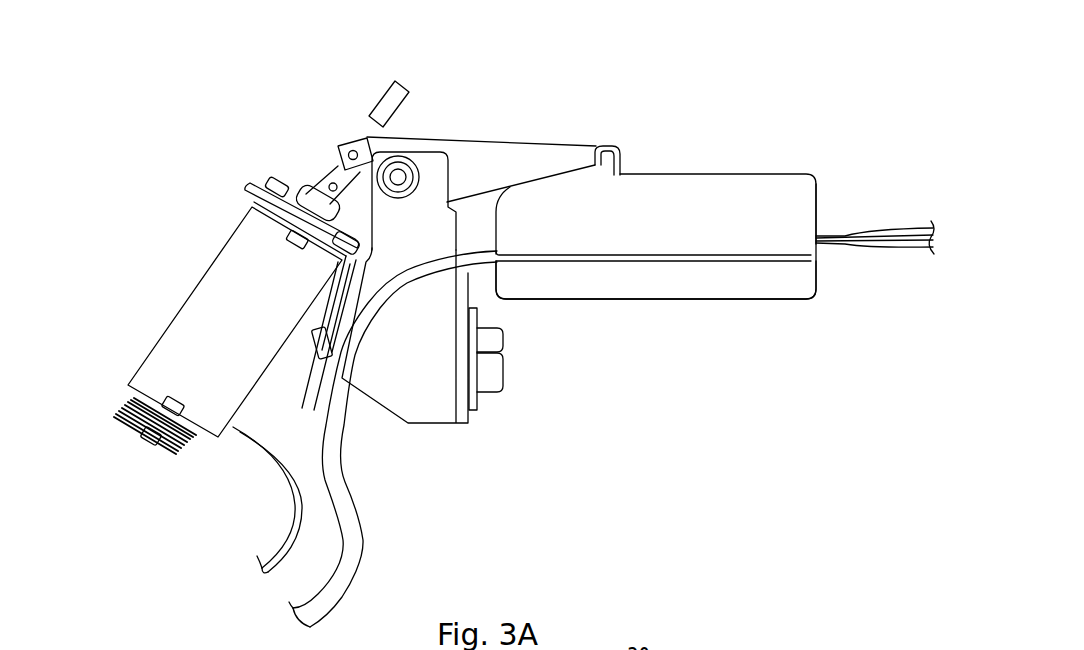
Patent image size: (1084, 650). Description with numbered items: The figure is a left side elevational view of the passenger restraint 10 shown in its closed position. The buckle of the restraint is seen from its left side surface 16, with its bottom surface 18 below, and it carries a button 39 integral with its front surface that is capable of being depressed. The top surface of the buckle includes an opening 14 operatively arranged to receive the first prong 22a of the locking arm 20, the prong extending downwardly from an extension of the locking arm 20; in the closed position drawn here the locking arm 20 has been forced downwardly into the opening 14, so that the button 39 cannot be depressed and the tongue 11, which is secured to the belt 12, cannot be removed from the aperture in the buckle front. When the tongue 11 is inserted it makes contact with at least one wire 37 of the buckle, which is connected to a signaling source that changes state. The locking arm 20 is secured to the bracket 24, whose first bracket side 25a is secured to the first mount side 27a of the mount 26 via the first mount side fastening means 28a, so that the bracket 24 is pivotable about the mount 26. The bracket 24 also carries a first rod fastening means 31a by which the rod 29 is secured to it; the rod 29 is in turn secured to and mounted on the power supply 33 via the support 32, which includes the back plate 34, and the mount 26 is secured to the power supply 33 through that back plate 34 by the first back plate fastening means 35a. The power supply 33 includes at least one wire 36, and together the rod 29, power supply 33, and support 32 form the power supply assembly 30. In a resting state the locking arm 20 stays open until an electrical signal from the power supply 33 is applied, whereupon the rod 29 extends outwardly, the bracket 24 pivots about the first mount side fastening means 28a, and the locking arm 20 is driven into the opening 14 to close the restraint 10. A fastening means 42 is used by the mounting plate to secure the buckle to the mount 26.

The passenger restraint 10 is at (495, 332).
The tongue 11 is at (826, 247).
The belt 12 is at (890, 250).
The opening 14 is at (625, 174).
The left side surface 16 is at (675, 237).
The bottom surface 18 is at (688, 300).
The locking arm 20 is at (633, 116).
The first prong 22a is at (601, 147).
The bracket 24 is at (463, 144).
The first bracket side 25a is at (511, 176).
The mount 26 is at (370, 356).
The first mount side 27a is at (439, 379).
The first mount side fastening means 28a is at (398, 172).
The rod 29 is at (397, 176).
The power supply assembly 30 is at (217, 359).
The first rod fastening means 31a is at (352, 145).
The support 32 is at (248, 187).
The power supply 33 is at (180, 318).
The back plate 34 is at (333, 333).
The first back plate fastening means 35a is at (325, 396).
The wire 36 is at (270, 547).
The wire 37 is at (363, 538).
The button 39 is at (817, 200).
The fastening means 42 is at (503, 368).